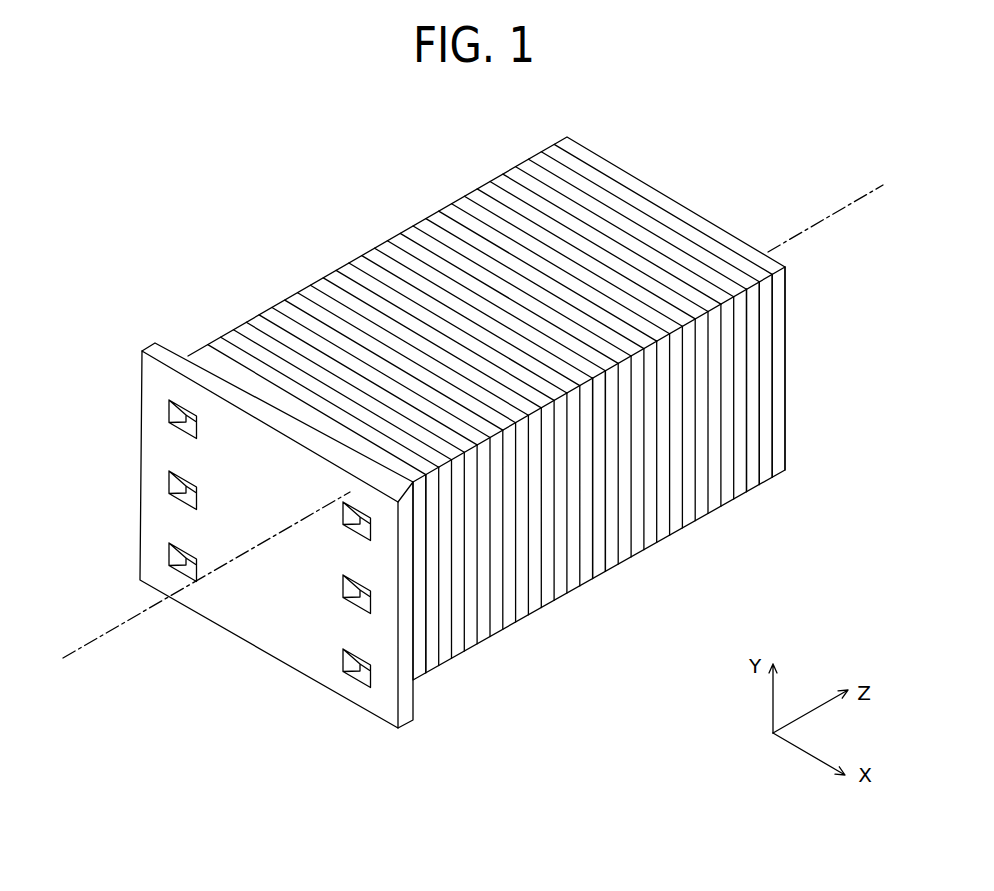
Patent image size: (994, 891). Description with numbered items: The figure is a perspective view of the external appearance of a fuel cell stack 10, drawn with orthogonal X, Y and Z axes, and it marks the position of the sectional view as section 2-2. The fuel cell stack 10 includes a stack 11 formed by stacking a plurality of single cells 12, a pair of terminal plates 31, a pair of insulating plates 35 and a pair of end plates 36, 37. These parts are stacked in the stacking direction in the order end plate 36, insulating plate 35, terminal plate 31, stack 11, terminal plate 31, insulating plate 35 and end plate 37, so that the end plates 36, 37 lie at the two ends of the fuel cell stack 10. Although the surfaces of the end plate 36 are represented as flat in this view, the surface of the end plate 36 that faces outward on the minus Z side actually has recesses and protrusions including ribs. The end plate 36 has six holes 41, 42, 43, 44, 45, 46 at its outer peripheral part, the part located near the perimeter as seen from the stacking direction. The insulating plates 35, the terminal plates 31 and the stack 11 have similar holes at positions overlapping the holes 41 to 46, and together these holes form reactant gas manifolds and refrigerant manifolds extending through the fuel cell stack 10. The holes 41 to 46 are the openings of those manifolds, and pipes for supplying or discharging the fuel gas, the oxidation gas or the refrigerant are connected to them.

The section 2- 2 is at (799, 244).
The fuel cell stack 10 is at (290, 185).
The stack 11 is at (802, 562).
The single cells 12 is at (588, 582).
The terminal plates 31 is at (420, 673).
The insulating plates 35 is at (765, 485).
The end plate 36 is at (263, 622).
The end plate 37 is at (780, 475).
The hole 41 is at (169, 423).
The hole 42 is at (169, 493).
The hole 43 is at (140, 580).
The hole 44 is at (345, 525).
The hole 45 is at (345, 598).
The hole 46 is at (350, 677).